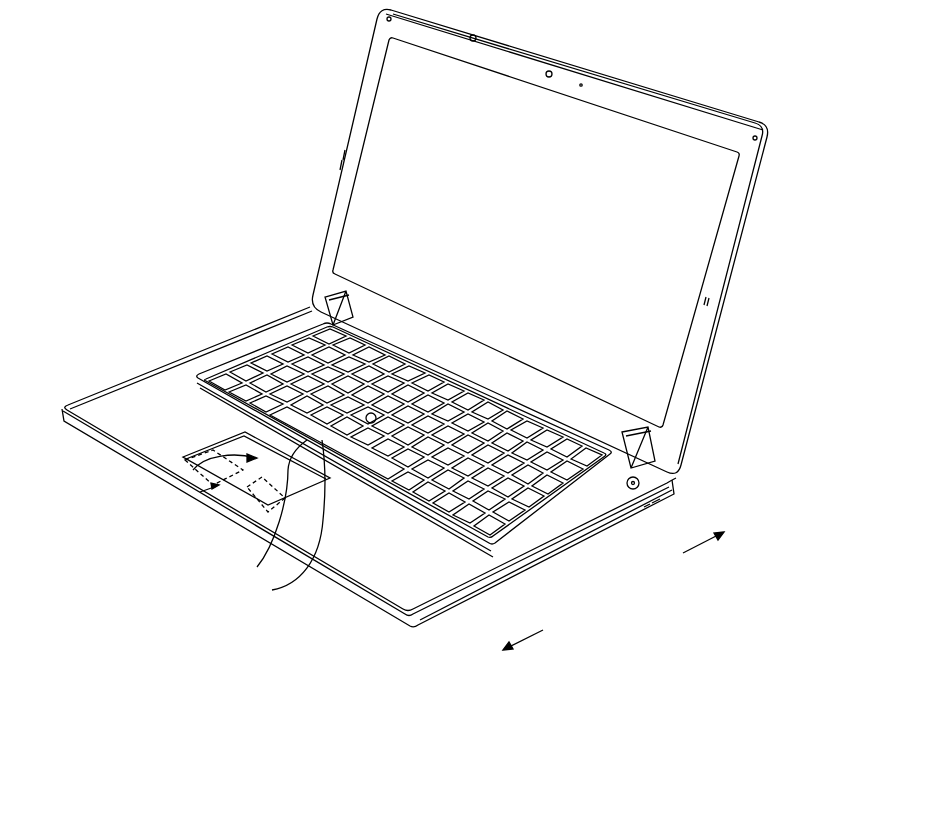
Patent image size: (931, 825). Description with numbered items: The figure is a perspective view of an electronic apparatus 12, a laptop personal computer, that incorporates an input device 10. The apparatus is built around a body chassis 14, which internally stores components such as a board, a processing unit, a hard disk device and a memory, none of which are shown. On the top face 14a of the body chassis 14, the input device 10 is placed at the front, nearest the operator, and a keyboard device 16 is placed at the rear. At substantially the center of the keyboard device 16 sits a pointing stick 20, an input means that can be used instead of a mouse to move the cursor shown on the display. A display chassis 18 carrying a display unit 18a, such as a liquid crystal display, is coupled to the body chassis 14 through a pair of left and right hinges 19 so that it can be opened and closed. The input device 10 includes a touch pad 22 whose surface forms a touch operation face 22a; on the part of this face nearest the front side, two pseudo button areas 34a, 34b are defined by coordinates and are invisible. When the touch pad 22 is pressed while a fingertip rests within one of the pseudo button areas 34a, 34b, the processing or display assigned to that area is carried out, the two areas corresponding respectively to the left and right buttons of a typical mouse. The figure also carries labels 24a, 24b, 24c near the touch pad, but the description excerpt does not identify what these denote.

The input device 10 is at (407, 552).
The electronic apparatus 12 is at (166, 48).
The body chassis 14 is at (107, 418).
The top face 14a is at (527, 543).
The keyboard device 16 is at (263, 360).
The display chassis 18 is at (569, 241).
The display unit 18a is at (687, 270).
The hinges 19 is at (326, 304).
The pointing stick 20 is at (375, 415).
The touch pad 22 is at (212, 495).
The touch operation face 22a is at (323, 485).
The first operation direction 24a is at (253, 455).
The second operation direction 24b is at (261, 513).
The third operation direction 24c is at (282, 524).
The pseudo button area 34a is at (200, 492).
The pseudo button area 34b is at (235, 528).